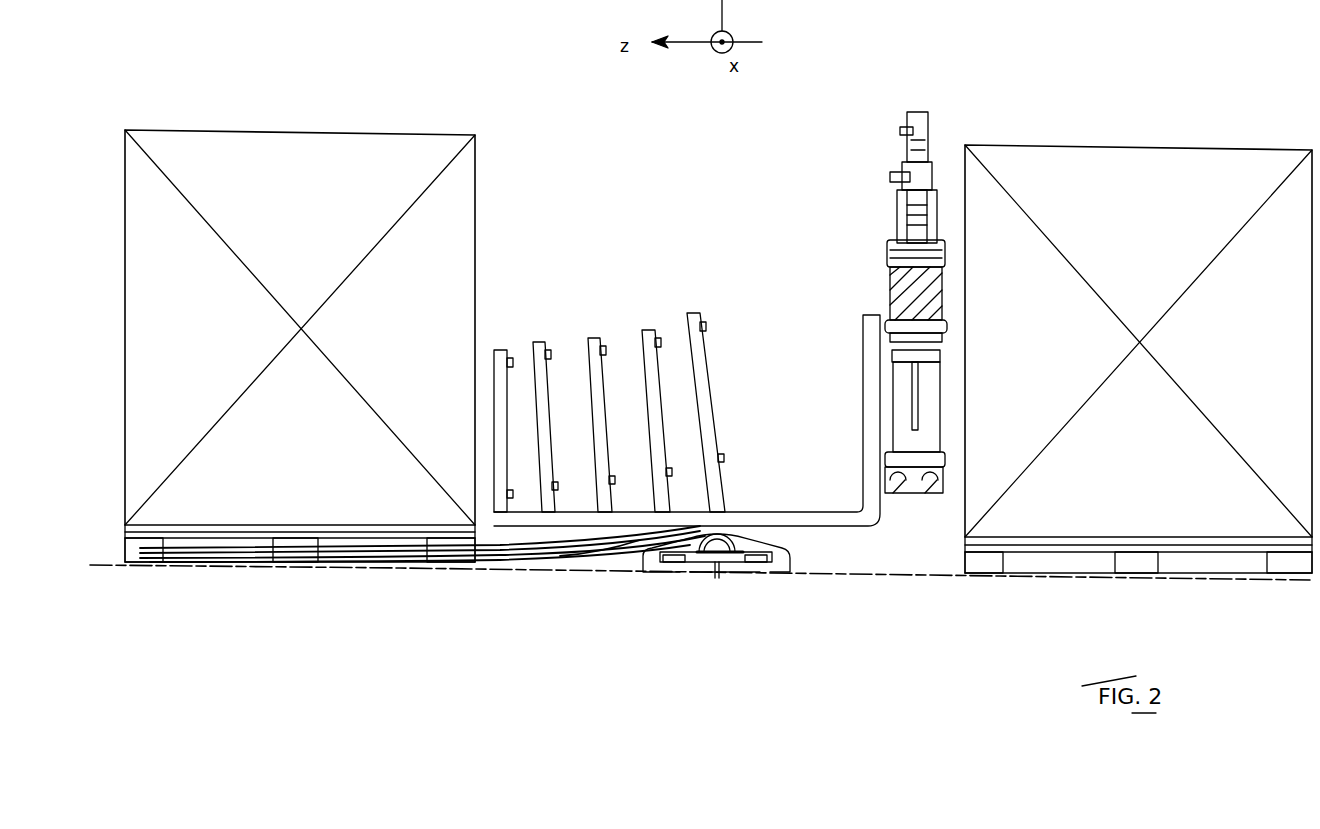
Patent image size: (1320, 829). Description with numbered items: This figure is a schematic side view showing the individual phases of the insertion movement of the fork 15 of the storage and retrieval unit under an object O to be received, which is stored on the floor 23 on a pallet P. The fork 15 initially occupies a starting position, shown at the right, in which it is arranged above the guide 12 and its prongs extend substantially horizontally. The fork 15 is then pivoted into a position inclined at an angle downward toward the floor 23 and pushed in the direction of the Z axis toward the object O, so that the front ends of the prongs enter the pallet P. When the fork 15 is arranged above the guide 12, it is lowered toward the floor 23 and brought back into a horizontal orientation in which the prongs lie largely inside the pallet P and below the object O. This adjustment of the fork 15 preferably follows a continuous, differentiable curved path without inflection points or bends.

The object O is at (310, 148).
The pallet P is at (138, 564).
The guide 12 is at (717, 578).
The fork 15 is at (708, 372).
The floor 23 is at (885, 572).